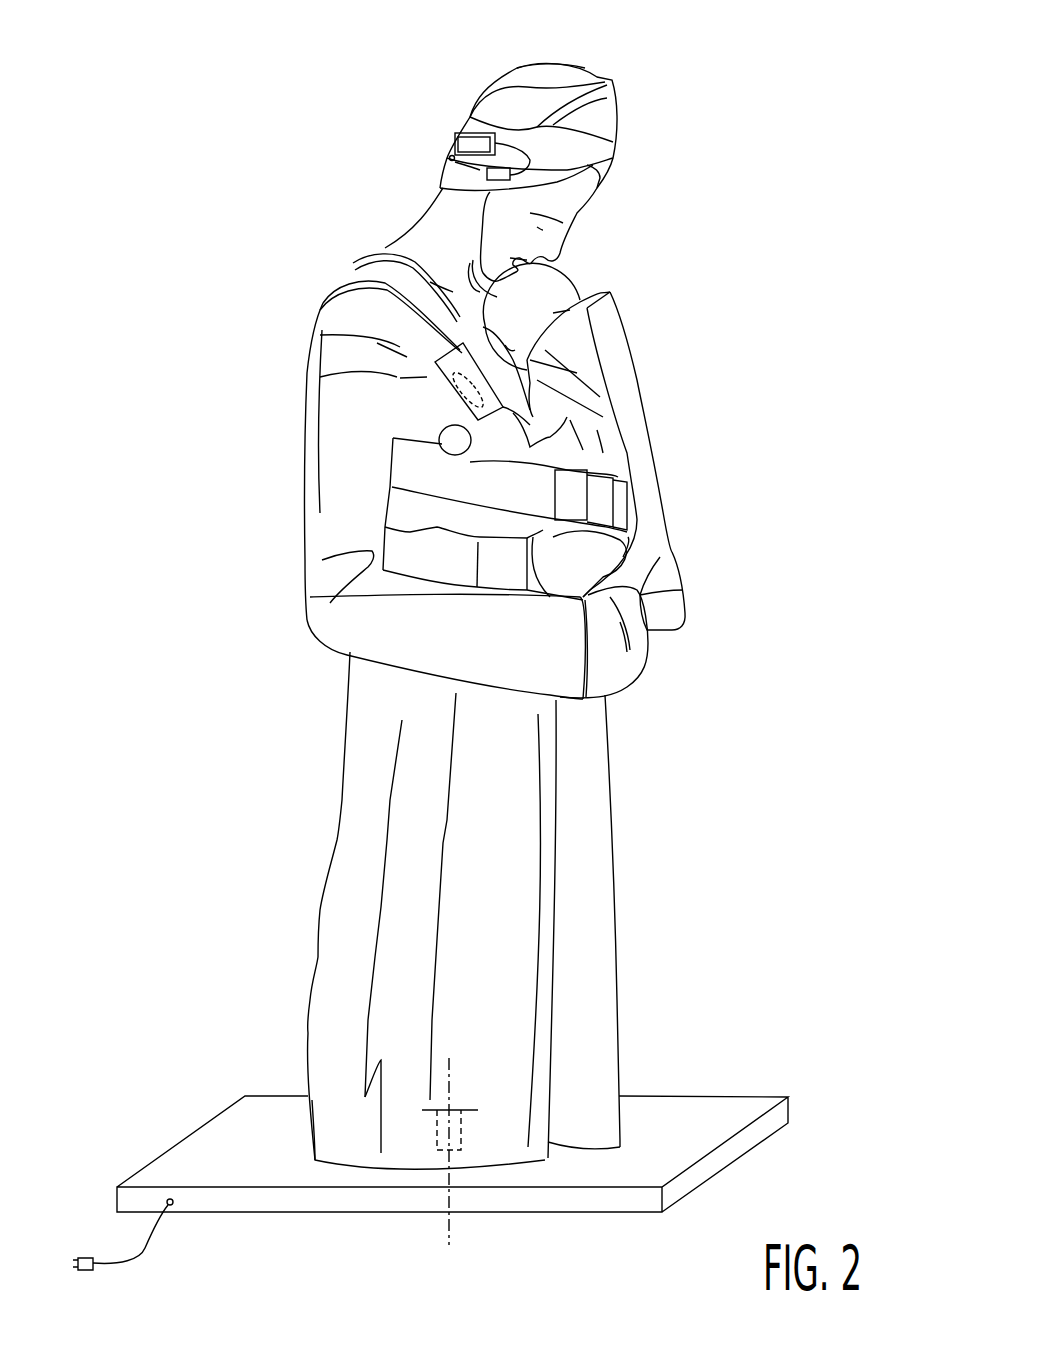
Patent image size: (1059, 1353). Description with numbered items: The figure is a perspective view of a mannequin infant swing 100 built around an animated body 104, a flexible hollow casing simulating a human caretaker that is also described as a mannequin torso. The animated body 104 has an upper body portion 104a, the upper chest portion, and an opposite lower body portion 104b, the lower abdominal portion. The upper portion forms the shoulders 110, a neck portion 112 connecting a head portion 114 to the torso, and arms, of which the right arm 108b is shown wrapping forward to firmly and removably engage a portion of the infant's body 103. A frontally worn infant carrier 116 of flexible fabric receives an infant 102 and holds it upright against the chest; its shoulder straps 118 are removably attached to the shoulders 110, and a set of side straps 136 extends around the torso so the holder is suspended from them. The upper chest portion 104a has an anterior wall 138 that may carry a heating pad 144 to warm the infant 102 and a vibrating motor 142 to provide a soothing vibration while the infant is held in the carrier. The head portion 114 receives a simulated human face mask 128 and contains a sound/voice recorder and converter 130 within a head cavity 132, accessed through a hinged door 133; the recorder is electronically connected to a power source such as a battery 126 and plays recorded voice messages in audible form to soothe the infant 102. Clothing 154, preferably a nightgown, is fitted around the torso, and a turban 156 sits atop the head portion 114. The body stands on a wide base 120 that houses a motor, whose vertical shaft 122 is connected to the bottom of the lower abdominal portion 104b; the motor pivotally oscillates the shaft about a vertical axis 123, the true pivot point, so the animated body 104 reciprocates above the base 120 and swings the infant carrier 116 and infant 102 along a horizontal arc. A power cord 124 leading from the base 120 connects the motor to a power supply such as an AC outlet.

The infant swing 100 is at (171, 99).
The infant 102 is at (560, 290).
The infant's body 103 is at (660, 563).
The animated body 104 is at (368, 687).
The upper body portion 104a is at (322, 333).
The lower body portion 104b is at (500, 738).
The right arm 108b is at (315, 582).
The shoulders 110 is at (353, 303).
The neck portion 112 is at (407, 233).
The head portion 114 is at (607, 120).
The infant carrier 116 is at (637, 438).
The shoulder straps 118 is at (355, 265).
The base 120 is at (727, 1110).
The vertical shaft 122 is at (457, 1140).
The vertical axis 123 is at (448, 1232).
The power cord 124 is at (150, 1243).
The battery 126 is at (487, 178).
The simulated human face mask 128 is at (585, 197).
The sound/voice recorder and converter 130 is at (466, 146).
The head cavity 132 is at (450, 162).
The hinged door 133 is at (451, 156).
The side straps 136 is at (403, 465).
The anterior wall 138 is at (443, 413).
The vibrating motor 142 is at (433, 373).
The heating pad 144 is at (400, 378).
The clothing 154 is at (313, 990).
The turban 156 is at (557, 62).